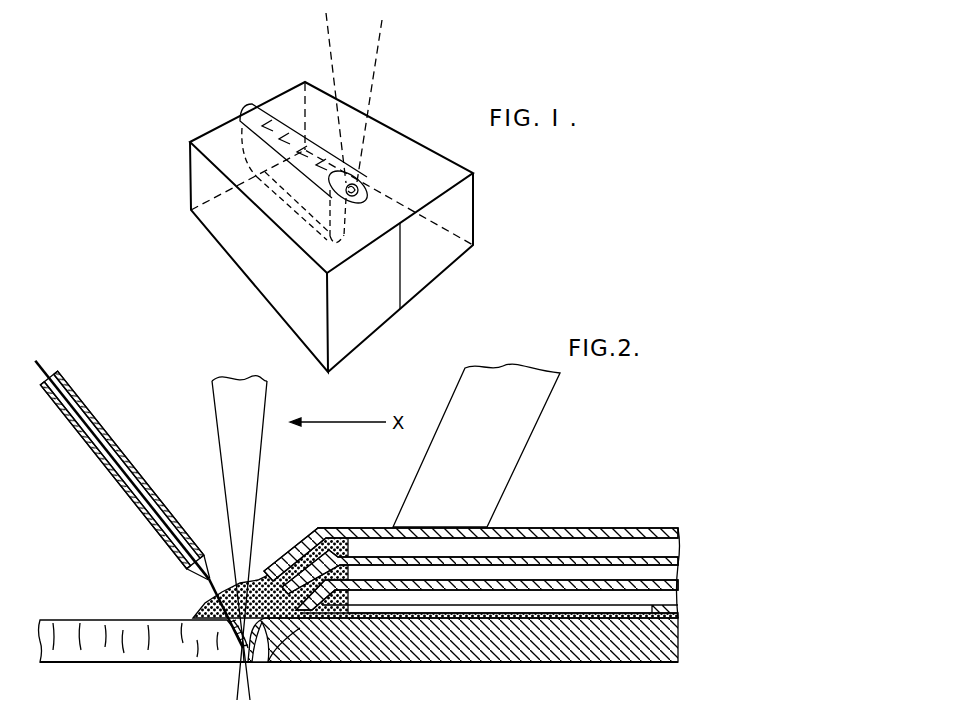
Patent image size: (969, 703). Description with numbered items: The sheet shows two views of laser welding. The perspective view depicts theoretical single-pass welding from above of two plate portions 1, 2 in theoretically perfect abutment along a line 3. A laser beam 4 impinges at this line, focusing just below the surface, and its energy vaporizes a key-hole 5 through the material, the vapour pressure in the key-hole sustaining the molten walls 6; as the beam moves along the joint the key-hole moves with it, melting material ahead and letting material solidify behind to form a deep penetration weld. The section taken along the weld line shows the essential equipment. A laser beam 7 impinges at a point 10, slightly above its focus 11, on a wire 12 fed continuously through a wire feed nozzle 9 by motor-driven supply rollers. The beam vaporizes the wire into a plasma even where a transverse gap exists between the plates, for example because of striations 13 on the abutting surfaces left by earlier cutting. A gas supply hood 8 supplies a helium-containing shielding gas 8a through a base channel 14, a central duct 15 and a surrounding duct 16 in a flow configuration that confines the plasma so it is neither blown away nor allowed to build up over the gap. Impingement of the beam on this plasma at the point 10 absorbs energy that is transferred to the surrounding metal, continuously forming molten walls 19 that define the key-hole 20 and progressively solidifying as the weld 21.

In FIG. 1, the plate portion 1 is at (372, 331).
In FIG. 1, the plate portion 2 is at (440, 270).
In FIG. 1, the abutment line 3 is at (401, 249).
In FIG. 1, the laser beam 4 is at (379, 47).
In FIG. 1, the key-hole 5 is at (355, 213).
In FIG. 1, the molten walls 6 is at (303, 173).
In FIG. 2, the laser beam 7 is at (220, 449).
In FIG. 2, the gas supply hood 8 is at (360, 530).
In FIG. 2, the gas supply 8a is at (207, 603).
In FIG. 2, the wire feed nozzle 9 is at (177, 572).
In FIG. 2, the impingement point 10 is at (254, 584).
In FIG. 2, the focus 11 is at (263, 646).
In FIG. 2, the wire 12 is at (160, 512).
In FIG. 2, the striations 13 is at (150, 628).
In FIG. 2, the base channel 14 is at (433, 598).
In FIG. 2, the central duct 15 is at (313, 541).
In FIG. 2, the surrounding duct 16 is at (298, 632).
In FIG. 2, the molten walls 19 is at (252, 650).
In FIG. 2, the key-hole 20 is at (233, 602).
In FIG. 2, the weld 21 is at (368, 637).